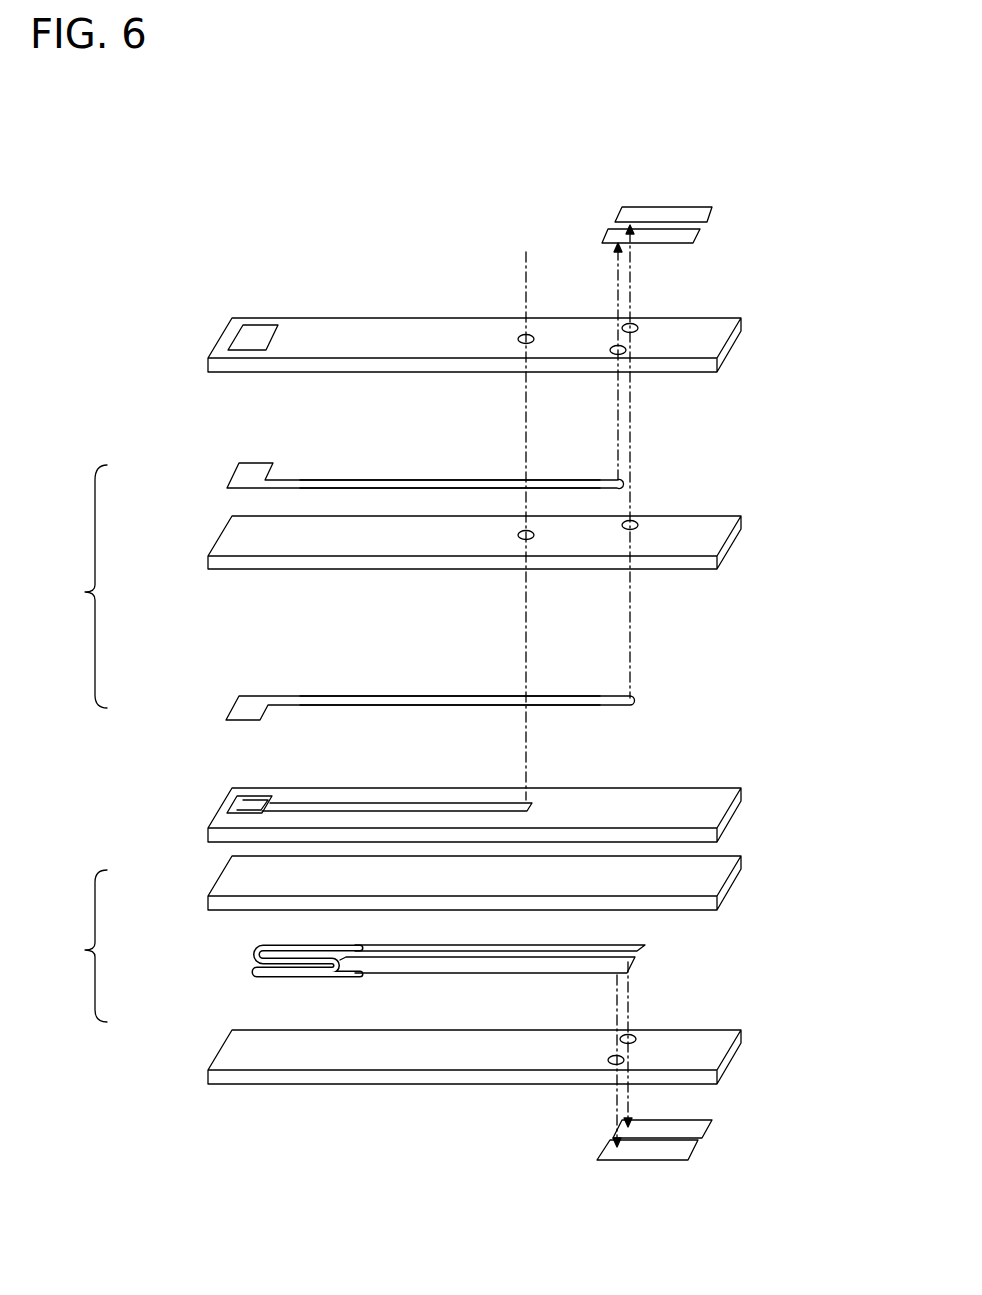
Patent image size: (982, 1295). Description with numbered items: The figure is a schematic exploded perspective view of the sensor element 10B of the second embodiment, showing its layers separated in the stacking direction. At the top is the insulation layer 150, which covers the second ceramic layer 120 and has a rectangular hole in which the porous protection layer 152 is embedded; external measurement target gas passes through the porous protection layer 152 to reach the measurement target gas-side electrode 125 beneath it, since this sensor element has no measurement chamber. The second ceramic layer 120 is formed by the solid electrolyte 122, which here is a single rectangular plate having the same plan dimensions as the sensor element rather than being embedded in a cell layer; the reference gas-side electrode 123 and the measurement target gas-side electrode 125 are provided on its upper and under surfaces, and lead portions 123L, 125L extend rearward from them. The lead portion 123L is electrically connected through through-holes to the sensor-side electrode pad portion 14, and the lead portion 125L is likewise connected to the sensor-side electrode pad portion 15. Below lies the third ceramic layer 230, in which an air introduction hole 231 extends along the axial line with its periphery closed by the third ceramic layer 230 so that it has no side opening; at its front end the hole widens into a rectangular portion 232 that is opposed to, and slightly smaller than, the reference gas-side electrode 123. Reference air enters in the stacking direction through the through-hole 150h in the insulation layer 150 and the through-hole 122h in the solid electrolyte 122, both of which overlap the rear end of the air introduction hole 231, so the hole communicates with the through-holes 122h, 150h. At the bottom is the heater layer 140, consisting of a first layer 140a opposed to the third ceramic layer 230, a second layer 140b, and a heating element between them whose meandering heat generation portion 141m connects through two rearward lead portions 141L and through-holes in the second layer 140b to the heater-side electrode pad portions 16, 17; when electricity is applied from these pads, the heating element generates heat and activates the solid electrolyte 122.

The sensor element 10B is at (243, 238).
The sensor-side electrode pad portion 14 is at (703, 212).
The sensor-side electrode pad portion 15 is at (697, 233).
The insulation layer 150 is at (464, 307).
The through-hole 150h is at (527, 335).
The porous protection layer 152 is at (243, 338).
The second ceramic layer 120 is at (389, 566).
The solid electrolyte 122 is at (446, 531).
The through-hole 122h is at (530, 530).
The measurement target gas-side electrode 125 is at (261, 463).
The lead portion 125L is at (400, 480).
The reference gas-side electrode 123 is at (253, 696).
The lead portion 123L is at (402, 697).
The third ceramic layer 230 is at (448, 788).
The air introduction hole 231 is at (378, 805).
The rectangular portion 232 is at (248, 797).
The heater layer 140 is at (389, 968).
The first layer 140a is at (222, 878).
The second layer 140b is at (222, 1055).
The heat generation portion 141m is at (252, 965).
The lead portion 141L is at (452, 983).
The heater-side electrode pad portion 16 is at (703, 1128).
The heater-side electrode pad portion 17 is at (690, 1148).